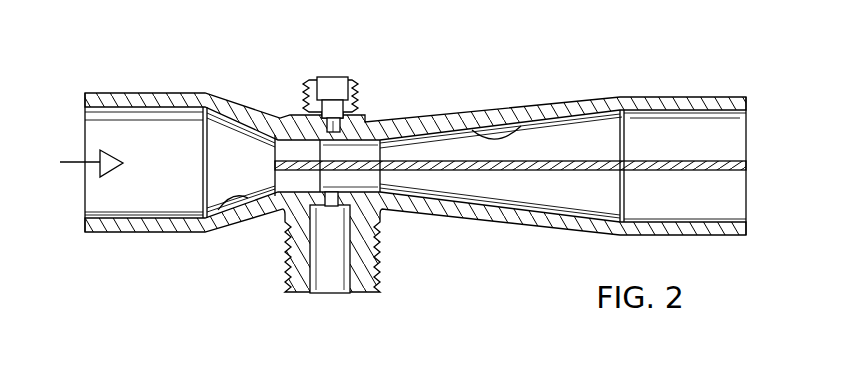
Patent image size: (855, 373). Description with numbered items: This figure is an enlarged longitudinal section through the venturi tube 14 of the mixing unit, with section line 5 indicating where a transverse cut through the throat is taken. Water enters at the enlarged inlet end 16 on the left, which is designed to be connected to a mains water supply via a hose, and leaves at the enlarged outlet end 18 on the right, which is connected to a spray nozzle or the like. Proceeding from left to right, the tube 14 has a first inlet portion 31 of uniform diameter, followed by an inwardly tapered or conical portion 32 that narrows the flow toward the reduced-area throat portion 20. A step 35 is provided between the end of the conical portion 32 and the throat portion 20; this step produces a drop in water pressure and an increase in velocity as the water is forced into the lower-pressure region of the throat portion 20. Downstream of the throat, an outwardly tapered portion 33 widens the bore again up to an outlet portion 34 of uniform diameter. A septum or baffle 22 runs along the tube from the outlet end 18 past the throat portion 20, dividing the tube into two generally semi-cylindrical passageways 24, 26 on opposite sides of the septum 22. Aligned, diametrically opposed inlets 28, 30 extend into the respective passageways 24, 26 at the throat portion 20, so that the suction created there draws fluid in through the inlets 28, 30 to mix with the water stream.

The section line 5- 5 is at (334, 65).
The venturi tube 14 is at (644, 82).
The inlet end 16 is at (82, 203).
The outlet end 18 is at (748, 205).
The throat portion 20 is at (393, 211).
The septum 22 is at (492, 170).
The passageway 24 is at (578, 150).
The passageway 26 is at (578, 192).
The inlet 28 is at (333, 132).
The inlet 30 is at (415, 260).
The inlet portion 31 is at (122, 108).
The conical portion 32 is at (216, 218).
The outwardly tapered portion 33 is at (507, 135).
The outlet portion 34 is at (720, 110).
The step 35 is at (283, 213).